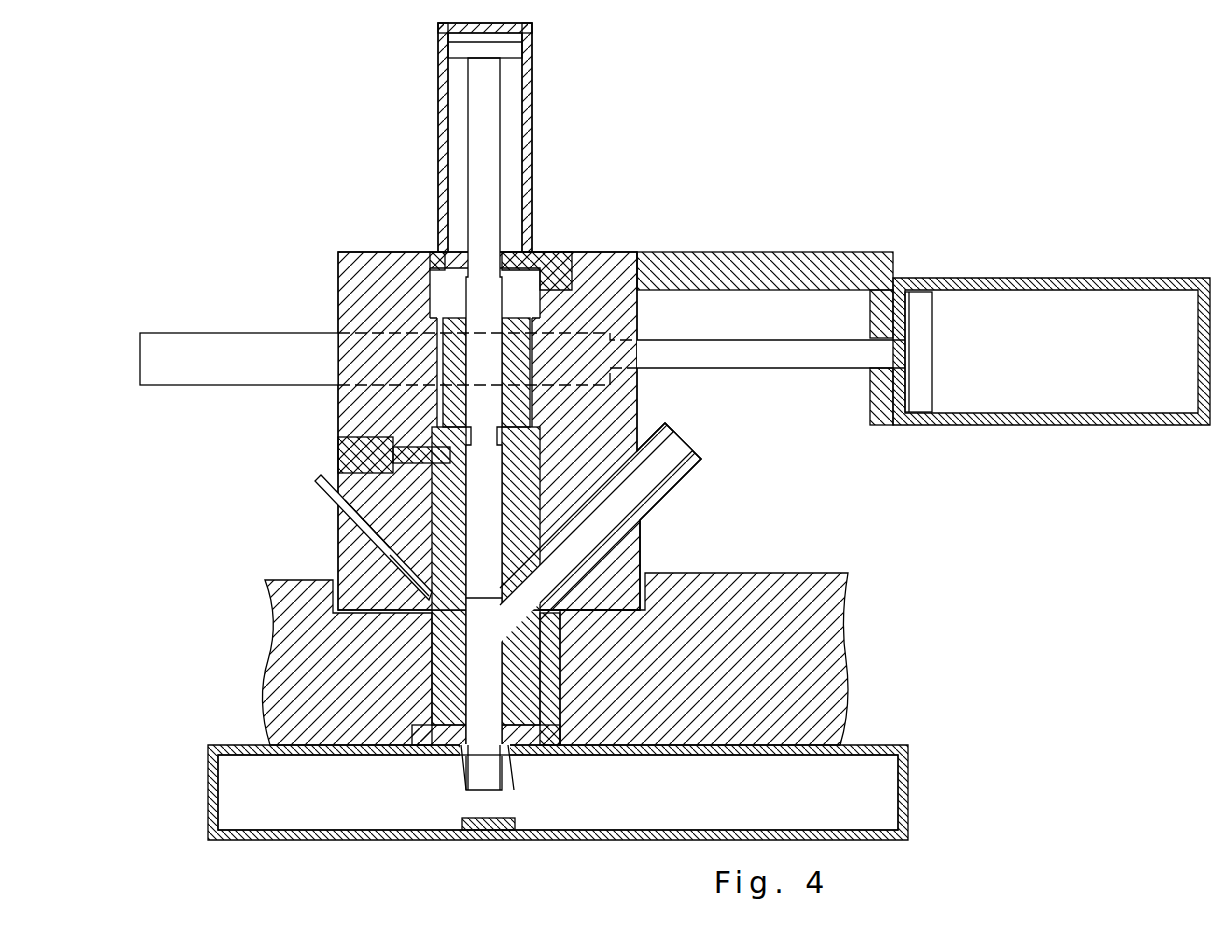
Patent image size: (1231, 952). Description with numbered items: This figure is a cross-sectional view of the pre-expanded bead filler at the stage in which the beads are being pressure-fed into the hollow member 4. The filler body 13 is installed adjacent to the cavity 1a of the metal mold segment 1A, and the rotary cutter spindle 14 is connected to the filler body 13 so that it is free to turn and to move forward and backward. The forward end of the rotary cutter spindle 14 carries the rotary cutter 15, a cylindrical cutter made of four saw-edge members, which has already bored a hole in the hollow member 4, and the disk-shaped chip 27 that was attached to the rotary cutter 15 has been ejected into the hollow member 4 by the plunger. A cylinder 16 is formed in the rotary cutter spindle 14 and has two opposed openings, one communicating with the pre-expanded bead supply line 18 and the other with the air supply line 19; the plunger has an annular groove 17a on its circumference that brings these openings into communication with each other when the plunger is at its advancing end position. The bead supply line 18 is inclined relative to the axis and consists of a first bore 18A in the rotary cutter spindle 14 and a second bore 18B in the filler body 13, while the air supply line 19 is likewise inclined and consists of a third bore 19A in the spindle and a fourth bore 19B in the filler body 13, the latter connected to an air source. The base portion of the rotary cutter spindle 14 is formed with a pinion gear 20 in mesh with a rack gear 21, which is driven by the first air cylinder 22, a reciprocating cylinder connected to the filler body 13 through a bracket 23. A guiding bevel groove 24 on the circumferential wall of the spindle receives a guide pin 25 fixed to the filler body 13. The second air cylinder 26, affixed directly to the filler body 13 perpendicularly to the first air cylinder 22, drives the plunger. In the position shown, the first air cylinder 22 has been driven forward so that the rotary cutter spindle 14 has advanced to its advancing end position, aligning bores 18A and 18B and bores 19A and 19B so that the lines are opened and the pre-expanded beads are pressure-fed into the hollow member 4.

The cavity 1a is at (818, 573).
The metal mold segment 1A is at (718, 805).
The hollow member 4 is at (880, 745).
The filler body 13 is at (384, 251).
The rotary cutter spindle 14 is at (443, 652).
The rotary cutter 15 is at (463, 768).
The cylinder 16 is at (472, 715).
The annular groove 17a is at (612, 412).
The pre-expanded bead supply line 18 is at (686, 448).
The first bore 18A is at (598, 610).
The second bore 18B is at (613, 540).
The air supply line 19 is at (345, 530).
The third bore 19A is at (332, 596).
The fourth bore 19B is at (343, 560).
The pinion gear 20 is at (578, 251).
The rack gear 21 is at (279, 333).
The first air cylinder 22 is at (1115, 278).
The bracket 23 is at (812, 251).
The guiding bevel groove 24 is at (605, 530).
The guide pin 25 is at (345, 452).
The second air cylinder 26 is at (533, 96).
The disk-shaped chip 27 is at (517, 818).